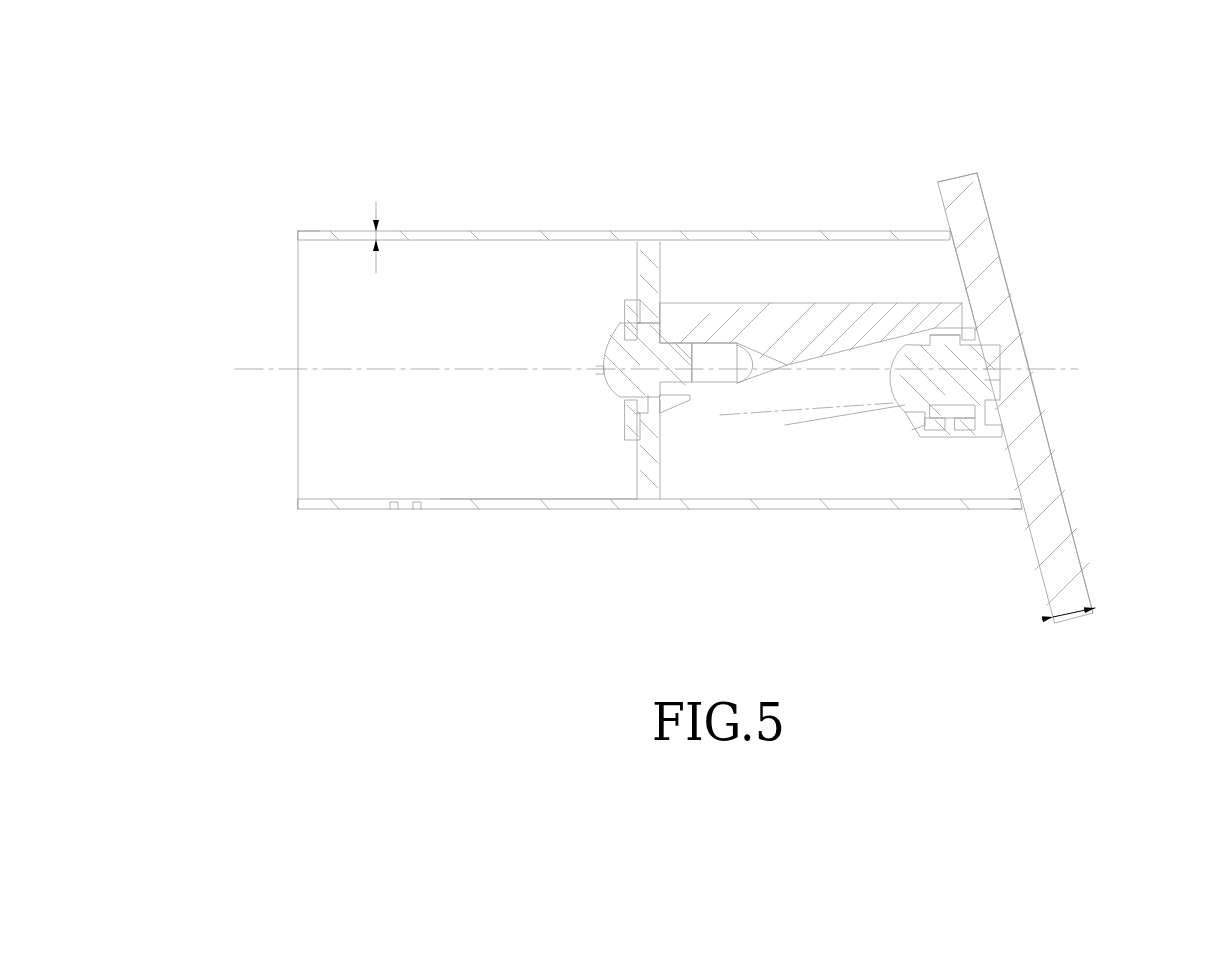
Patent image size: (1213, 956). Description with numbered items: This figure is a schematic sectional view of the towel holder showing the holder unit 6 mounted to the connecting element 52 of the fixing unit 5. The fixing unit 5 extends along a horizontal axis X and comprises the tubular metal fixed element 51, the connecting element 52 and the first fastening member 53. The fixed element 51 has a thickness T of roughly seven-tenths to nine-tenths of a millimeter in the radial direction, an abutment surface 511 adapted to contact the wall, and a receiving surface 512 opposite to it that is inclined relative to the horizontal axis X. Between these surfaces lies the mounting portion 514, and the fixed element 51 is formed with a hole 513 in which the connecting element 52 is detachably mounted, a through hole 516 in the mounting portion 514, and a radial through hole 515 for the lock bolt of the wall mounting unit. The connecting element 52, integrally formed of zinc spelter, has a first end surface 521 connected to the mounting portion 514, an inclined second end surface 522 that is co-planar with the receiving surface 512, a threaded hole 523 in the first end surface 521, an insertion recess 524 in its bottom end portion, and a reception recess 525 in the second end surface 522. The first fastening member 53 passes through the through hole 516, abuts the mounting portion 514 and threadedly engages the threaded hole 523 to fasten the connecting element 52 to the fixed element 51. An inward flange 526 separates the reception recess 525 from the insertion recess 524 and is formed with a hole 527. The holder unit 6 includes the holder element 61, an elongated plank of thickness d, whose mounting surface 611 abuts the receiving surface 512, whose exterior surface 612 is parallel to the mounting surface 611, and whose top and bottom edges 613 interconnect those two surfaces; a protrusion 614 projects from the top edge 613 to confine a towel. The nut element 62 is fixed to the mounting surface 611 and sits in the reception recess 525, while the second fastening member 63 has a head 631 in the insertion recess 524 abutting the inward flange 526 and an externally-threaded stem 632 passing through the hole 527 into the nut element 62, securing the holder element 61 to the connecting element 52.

The fixing unit 5 is at (470, 224).
The fixed element 51 is at (808, 230).
The abutment surface 511 is at (298, 278).
The receiving surface 512 is at (1022, 503).
The hole 513 is at (500, 470).
The mounting portion 514 is at (637, 458).
The through hole 515 is at (402, 505).
The through hole 516 is at (650, 333).
The connecting element 52 is at (717, 302).
The first end surface 521 is at (648, 333).
The second end surface 522 is at (975, 320).
The threaded hole 523 is at (673, 393).
The insertion recess 524 is at (772, 395).
The reception recess 525 is at (978, 420).
The inward flange 526 is at (947, 428).
The hole 527 is at (933, 408).
The first fastening member 53 is at (603, 338).
The holder unit 6 is at (1060, 336).
The holder element 61 is at (1000, 253).
The mounting surface 611 is at (973, 318).
The exterior surface 612 is at (1048, 437).
The top and bottom edges 613 is at (963, 230).
The protrusion 614 is at (957, 178).
The nut element 62 is at (965, 415).
The second fastening member 63 is at (912, 412).
The head 631 is at (902, 338).
The externally-threaded stem 632 is at (982, 385).
The horizontal axis X is at (641, 369).
The thickness T is at (361, 232).
The thickness d is at (1074, 595).